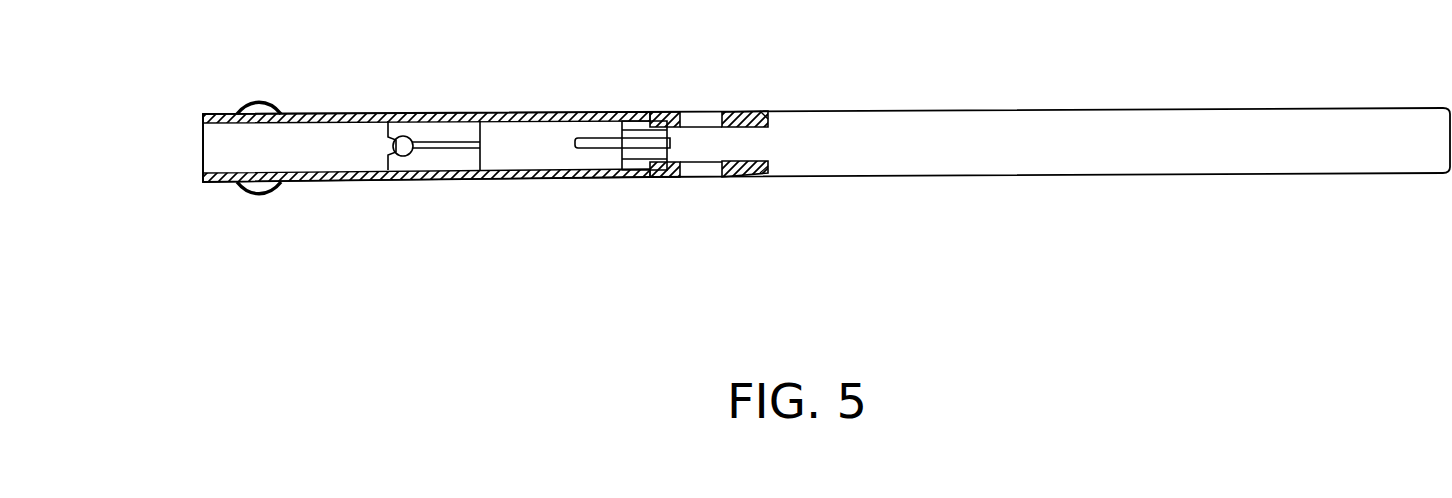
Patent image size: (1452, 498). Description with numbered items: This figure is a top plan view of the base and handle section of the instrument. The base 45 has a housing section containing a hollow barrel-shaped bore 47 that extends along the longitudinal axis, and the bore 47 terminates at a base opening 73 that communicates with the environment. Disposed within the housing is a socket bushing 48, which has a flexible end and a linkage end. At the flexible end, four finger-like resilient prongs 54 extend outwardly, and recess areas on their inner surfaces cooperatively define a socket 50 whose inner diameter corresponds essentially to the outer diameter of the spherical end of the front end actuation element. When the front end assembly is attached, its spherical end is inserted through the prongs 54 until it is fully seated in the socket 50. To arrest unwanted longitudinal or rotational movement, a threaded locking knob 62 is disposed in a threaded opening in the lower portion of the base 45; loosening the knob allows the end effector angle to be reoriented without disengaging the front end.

The base 45 is at (620, 112).
The bore 47 is at (338, 147).
The socket bushing 48 is at (552, 122).
The socket 50 is at (410, 122).
The prongs 54 is at (450, 122).
The locking knob 62 is at (272, 195).
The base opening 73 is at (203, 140).